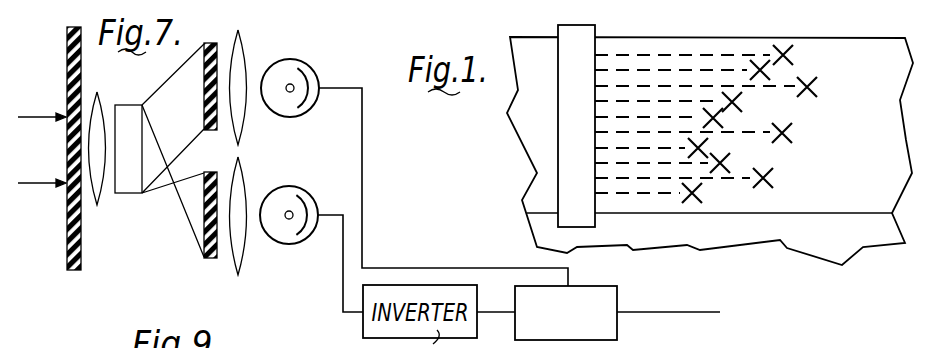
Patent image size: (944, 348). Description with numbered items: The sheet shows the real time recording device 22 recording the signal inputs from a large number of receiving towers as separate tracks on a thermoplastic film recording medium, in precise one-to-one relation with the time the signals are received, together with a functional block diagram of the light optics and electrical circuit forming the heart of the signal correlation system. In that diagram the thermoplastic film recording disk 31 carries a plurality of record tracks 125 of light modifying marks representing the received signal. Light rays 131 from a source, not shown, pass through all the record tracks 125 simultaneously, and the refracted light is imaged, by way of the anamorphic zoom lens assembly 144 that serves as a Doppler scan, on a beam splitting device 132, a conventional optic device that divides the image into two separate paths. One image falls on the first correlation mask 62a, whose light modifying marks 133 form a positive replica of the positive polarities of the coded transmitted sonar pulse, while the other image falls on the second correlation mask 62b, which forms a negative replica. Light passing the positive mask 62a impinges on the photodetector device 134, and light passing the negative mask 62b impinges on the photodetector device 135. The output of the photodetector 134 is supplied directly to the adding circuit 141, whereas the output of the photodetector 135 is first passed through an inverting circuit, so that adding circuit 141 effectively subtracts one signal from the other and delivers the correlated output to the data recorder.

In FIG. 7, the thermoplastic film recording disk 31 is at (67, 43).
In FIG. 7, the record tracks of light modifying marks 125 is at (80, 225).
In FIG. 7, the light rays 131 is at (39, 115).
In FIG. 7, the anamorphic zoom lens assembly 144 is at (99, 97).
In FIG. 7, the beam splitting device 132 is at (123, 188).
In FIG. 7, the light modifying marks 133 is at (205, 85).
In FIG. 7, the first correlation mask 62a is at (210, 43).
In FIG. 7, the second correlation mask 62b is at (211, 257).
In FIG. 7, the photodetector device 134 is at (303, 63).
In FIG. 7, the photodetector device 135 is at (303, 238).
In FIG. 7, the adding circuit 141 is at (612, 296).
In FIG. 1, the real time recording device 22 is at (583, 33).